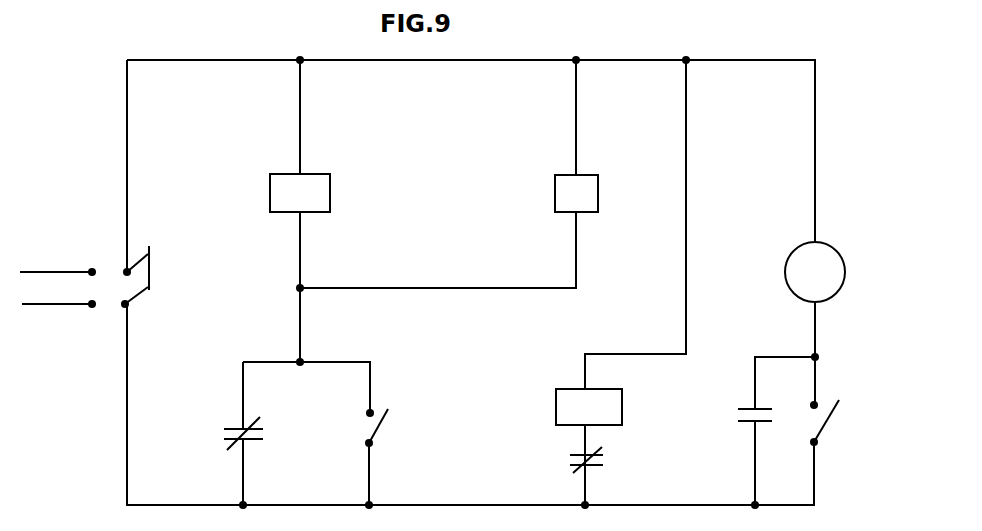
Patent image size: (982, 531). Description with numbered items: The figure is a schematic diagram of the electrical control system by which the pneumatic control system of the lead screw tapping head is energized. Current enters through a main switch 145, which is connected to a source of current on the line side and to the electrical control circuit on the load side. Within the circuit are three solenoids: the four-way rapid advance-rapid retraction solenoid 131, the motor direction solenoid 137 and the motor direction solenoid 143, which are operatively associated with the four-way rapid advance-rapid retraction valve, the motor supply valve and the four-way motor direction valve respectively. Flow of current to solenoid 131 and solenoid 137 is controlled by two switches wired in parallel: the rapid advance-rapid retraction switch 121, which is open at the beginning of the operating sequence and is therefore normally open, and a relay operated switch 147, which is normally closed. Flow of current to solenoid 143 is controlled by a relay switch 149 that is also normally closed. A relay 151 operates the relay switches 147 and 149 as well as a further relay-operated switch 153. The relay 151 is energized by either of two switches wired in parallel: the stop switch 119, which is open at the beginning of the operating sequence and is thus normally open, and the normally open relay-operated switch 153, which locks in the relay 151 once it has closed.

The main switch 145 is at (120, 280).
The four-way rapid advance-rapid retraction solenoid 131 is at (316, 185).
The motor direction solenoid 137 is at (590, 187).
The motor direction solenoid 143 is at (622, 407).
The relay operated switch 147 is at (238, 428).
The rapid advance-rapid retraction switch 121 is at (375, 432).
The relay switch 149 is at (570, 462).
The relay 151 is at (797, 270).
The relay-operated switch 153 is at (745, 403).
The stop switch 119 is at (833, 413).